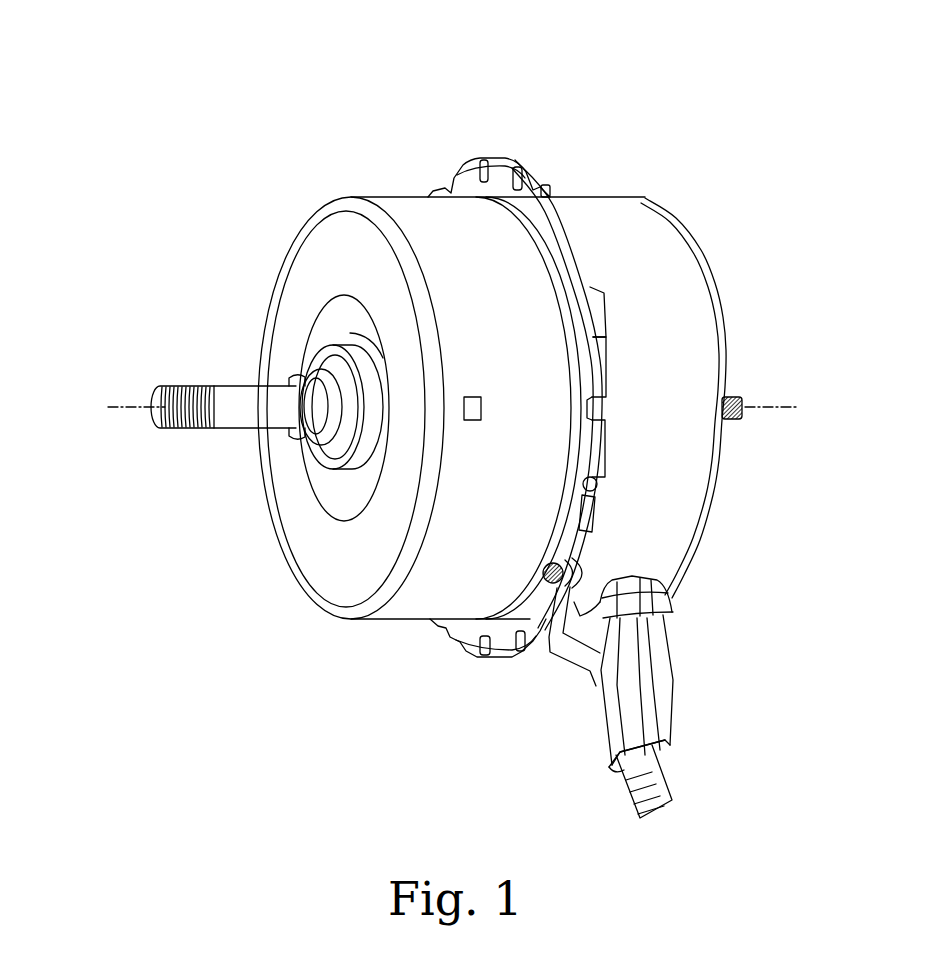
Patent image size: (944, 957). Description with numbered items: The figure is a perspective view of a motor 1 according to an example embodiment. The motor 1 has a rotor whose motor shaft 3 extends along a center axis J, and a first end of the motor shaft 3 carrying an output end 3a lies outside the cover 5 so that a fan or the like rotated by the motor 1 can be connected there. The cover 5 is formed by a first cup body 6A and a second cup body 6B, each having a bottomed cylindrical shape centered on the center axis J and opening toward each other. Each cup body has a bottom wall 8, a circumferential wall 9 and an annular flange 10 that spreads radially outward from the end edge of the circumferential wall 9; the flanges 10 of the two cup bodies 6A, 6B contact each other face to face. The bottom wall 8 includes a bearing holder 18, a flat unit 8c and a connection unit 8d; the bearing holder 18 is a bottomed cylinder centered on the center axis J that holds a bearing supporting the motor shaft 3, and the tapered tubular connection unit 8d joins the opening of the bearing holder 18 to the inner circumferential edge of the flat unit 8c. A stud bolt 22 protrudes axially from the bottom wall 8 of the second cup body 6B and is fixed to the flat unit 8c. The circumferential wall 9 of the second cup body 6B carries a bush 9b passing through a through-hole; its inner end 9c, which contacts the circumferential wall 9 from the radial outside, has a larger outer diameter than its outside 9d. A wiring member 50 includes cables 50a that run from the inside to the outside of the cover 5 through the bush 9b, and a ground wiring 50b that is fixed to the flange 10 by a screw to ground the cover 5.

The motor 1 is at (716, 86).
The center axis J is at (133, 404).
The motor shaft 3 is at (228, 409).
The output end 3a is at (206, 426).
The cover 5 is at (506, 350).
The first cup body 6A is at (412, 190).
The second cup body 6B is at (568, 354).
The bottom wall 8 is at (337, 421).
The flat unit 8c is at (346, 571).
The connection unit 8d is at (347, 504).
The circumferential wall 9 is at (561, 466).
The bush 9b is at (644, 677).
The inner end 9c is at (658, 610).
The outside 9d is at (643, 712).
The flange 10 is at (600, 200).
The bearing holder 18 is at (348, 485).
The stud bolt 22 is at (742, 392).
The wiring member 50 is at (638, 702).
The cable 50a is at (650, 753).
The ground wiring 50b is at (575, 657).